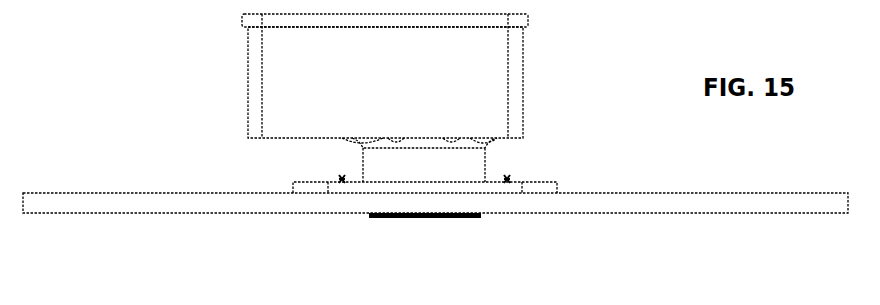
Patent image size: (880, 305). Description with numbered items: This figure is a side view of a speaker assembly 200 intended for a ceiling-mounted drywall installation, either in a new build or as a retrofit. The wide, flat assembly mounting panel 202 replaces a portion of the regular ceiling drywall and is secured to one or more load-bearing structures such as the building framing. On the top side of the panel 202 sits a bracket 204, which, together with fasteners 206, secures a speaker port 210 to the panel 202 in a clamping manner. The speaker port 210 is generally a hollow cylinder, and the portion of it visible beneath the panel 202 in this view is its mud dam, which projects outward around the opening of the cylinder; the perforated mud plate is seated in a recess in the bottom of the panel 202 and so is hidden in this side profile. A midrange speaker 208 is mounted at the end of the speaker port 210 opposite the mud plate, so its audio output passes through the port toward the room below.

The speaker assembly 200 is at (121, 79).
The assembly mounting panel 202 is at (118, 220).
The bracket 204 is at (299, 179).
The fasteners 206 is at (335, 168).
The midrange speaker 208 is at (534, 59).
The speaker port 210 is at (494, 158).